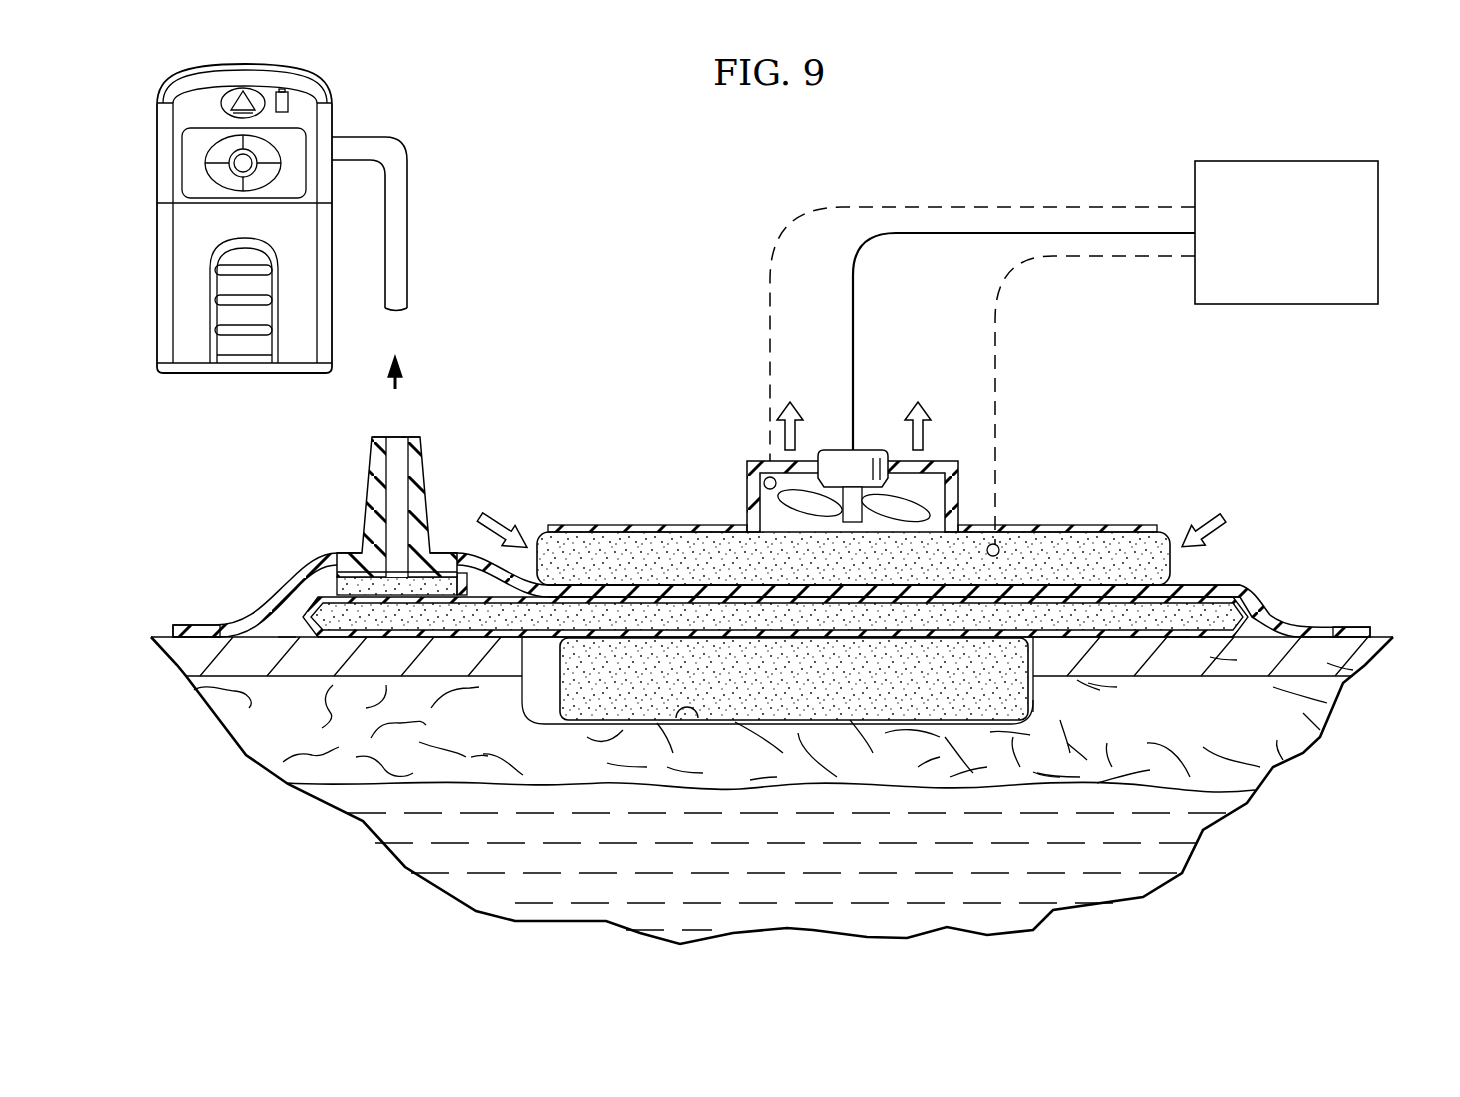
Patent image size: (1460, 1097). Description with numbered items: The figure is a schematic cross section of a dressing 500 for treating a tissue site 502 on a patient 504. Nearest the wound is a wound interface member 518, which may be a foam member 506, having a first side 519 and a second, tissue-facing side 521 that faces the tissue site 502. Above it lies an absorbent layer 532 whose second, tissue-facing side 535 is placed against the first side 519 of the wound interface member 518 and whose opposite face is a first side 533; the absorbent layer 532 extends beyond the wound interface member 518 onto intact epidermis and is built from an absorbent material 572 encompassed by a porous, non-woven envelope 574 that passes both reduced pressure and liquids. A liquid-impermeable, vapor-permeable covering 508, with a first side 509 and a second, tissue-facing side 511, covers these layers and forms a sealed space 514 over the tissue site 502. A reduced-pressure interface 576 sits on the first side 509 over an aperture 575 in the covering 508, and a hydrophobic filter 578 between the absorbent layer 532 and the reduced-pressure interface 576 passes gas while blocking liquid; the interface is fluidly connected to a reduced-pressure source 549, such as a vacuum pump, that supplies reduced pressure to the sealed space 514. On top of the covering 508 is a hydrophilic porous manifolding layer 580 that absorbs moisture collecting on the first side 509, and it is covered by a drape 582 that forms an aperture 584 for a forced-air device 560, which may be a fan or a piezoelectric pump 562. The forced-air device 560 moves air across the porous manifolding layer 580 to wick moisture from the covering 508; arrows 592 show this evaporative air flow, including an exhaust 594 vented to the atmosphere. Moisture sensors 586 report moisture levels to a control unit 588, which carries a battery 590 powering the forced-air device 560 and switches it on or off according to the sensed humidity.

The dressing 500 is at (627, 182).
The tissue site 502 is at (522, 680).
The patient 504 is at (519, 682).
The foam member 506 is at (822, 691).
The covering 508 is at (190, 616).
The first side 509 is at (1350, 627).
The second, tissue-facing side 511 is at (1380, 640).
The sealed space 514 is at (1065, 677).
The wound interface member 518 is at (688, 718).
The first side 519 is at (1036, 712).
The second, tissue-facing side 521 is at (760, 805).
The absorbent layer 532 is at (771, 569).
The first side 533 is at (1190, 597).
The second, tissue-facing side 535 is at (1180, 640).
The reduced-pressure source 549 is at (157, 127).
The forced-air device 560 is at (776, 488).
The piezoelectric pump 562 is at (747, 498).
The absorbent material 572 is at (473, 605).
The envelope 574 is at (293, 640).
The aperture 575 is at (370, 535).
The reduced-pressure interface 576 is at (375, 503).
The hydrophobic filter 578 is at (337, 586).
The porous manifolding layer 580 is at (1172, 540).
The drape 582 is at (1110, 526).
The aperture 584 is at (935, 527).
The moisture sensors 586 is at (765, 478).
The control unit 588 is at (1115, 321).
The battery 590 is at (1380, 220).
The arrows 592 is at (856, 450).
The exhaust 594 is at (926, 400).